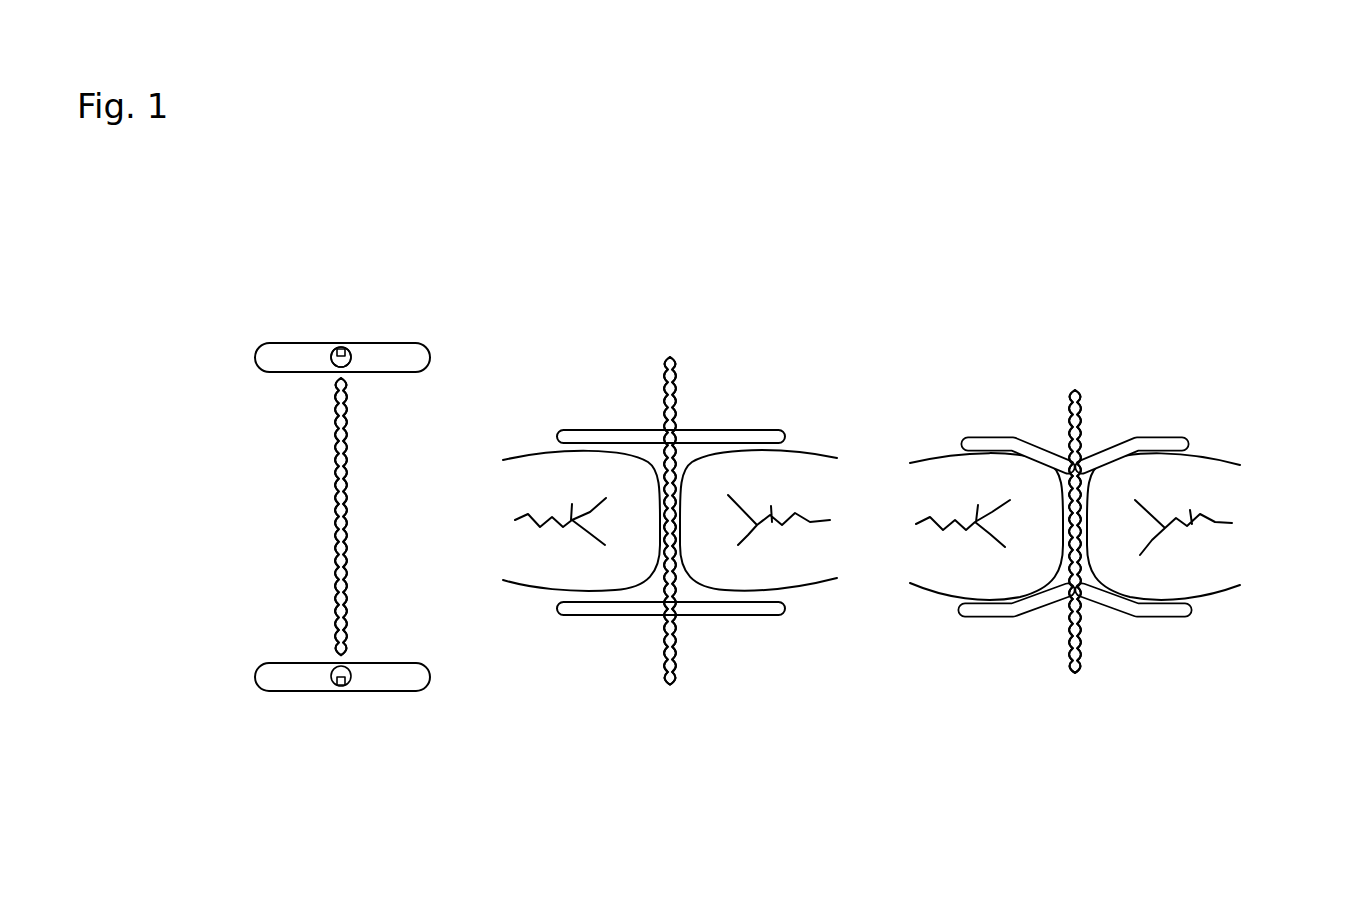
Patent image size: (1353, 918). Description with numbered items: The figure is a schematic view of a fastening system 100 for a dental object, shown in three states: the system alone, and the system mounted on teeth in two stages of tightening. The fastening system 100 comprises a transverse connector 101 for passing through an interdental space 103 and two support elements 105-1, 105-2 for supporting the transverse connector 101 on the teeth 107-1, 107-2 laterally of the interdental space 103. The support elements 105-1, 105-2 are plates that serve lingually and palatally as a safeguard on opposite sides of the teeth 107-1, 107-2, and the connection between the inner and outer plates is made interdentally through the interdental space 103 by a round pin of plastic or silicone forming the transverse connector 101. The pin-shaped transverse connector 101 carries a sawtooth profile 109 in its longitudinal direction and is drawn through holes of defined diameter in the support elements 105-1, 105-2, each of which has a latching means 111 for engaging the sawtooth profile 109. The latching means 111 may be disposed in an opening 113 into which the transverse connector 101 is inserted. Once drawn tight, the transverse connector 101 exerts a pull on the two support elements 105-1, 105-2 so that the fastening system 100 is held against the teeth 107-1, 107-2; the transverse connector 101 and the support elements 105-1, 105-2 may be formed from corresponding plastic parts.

The fastening system 100 is at (322, 268).
The transverse connector 101 is at (348, 632).
The interdental space 103 is at (680, 520).
The support element 105-1 is at (275, 675).
The support element 105-2 is at (580, 433).
The tooth 107-1 is at (580, 540).
The tooth 107-2 is at (735, 535).
The sawtooth profile 109 is at (335, 398).
The latching means 111 is at (345, 349).
The opening 113 is at (332, 361).